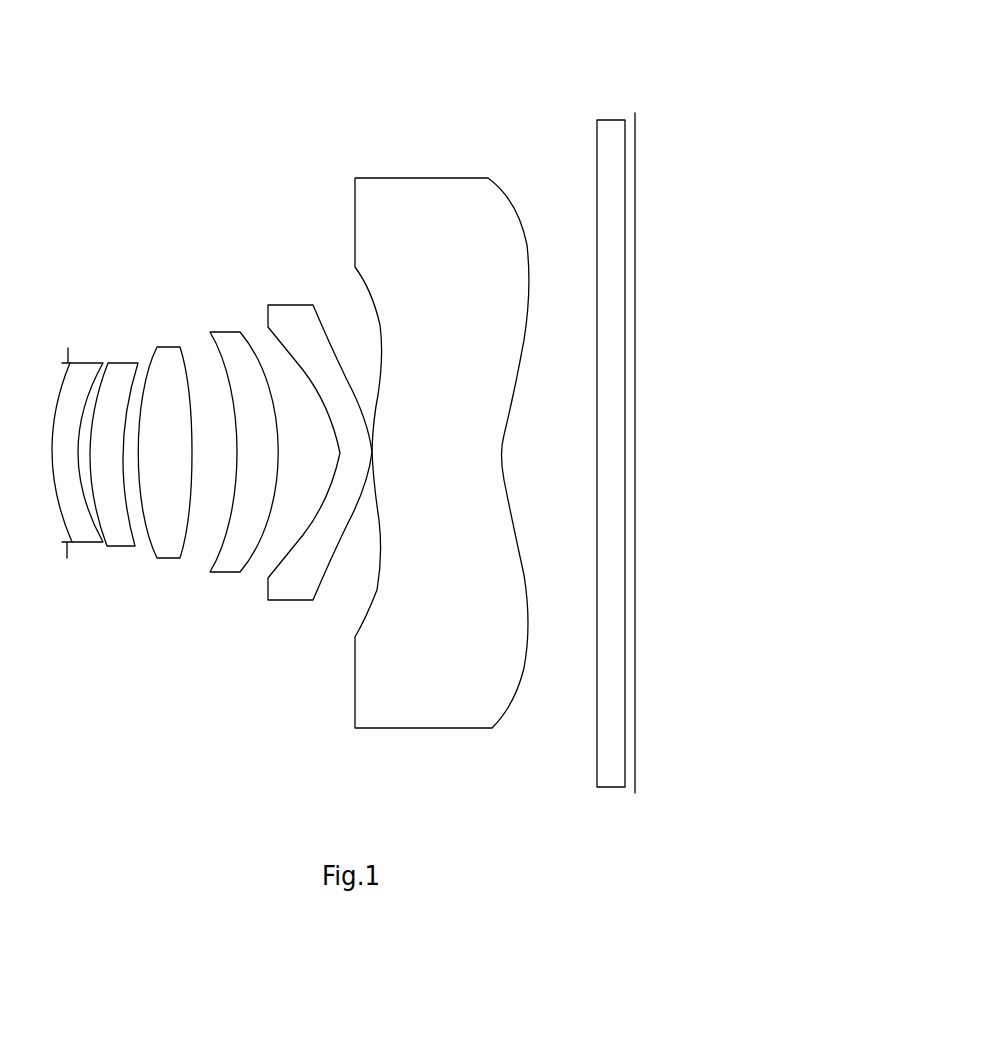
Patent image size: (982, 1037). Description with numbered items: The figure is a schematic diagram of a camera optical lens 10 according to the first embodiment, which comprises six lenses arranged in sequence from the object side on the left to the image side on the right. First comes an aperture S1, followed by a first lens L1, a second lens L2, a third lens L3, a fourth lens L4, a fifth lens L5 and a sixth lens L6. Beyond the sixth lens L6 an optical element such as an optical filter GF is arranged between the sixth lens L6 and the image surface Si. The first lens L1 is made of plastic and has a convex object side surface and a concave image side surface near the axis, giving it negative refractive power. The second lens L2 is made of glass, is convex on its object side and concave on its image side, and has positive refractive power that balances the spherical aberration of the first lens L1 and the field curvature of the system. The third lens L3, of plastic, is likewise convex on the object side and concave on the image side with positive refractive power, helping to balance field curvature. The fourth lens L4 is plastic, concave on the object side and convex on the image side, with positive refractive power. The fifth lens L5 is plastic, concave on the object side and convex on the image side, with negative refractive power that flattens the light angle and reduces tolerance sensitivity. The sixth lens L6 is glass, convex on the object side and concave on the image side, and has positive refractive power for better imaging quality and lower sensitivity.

The camera optical lens 10 is at (367, 40).
The aperture S1 is at (56, 451).
The first lens L1 is at (77, 441).
The second lens L2 is at (114, 442).
The third lens L3 is at (165, 441).
The fourth lens L4 is at (244, 441).
The fifth lens L5 is at (320, 442).
The sixth lens L6 is at (442, 442).
The optical filter GF is at (611, 444).
The image surface Si is at (643, 443).